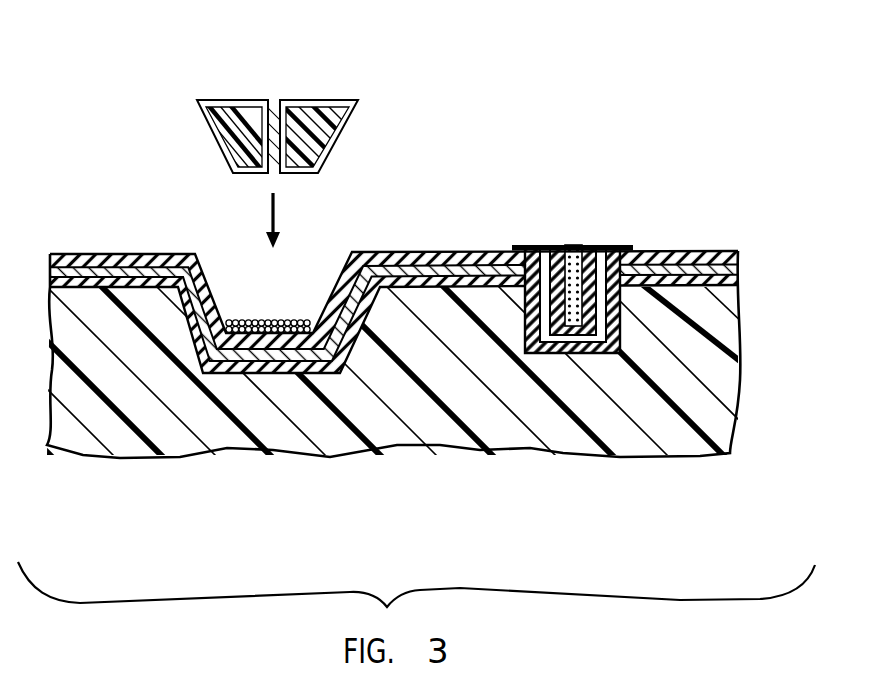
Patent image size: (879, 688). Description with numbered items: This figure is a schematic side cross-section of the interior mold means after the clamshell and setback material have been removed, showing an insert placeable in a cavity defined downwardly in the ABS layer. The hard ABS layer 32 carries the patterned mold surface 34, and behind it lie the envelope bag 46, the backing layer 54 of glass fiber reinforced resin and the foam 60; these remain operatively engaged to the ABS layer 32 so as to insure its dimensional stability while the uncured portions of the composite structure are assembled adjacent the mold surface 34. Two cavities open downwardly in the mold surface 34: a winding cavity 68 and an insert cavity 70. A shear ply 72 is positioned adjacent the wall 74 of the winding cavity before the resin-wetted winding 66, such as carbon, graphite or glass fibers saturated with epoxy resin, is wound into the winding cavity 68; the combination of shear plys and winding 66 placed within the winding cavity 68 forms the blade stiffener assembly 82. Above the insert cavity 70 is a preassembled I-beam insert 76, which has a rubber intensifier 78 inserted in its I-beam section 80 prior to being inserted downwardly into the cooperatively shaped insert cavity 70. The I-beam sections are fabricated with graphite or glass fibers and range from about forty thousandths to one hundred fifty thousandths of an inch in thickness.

The layer of heat deformable ABS plastic 32 is at (712, 246).
The mold surface 34 is at (95, 254).
The envelope bag 46 is at (737, 262).
The backing layer 54 is at (737, 278).
The foam 60 is at (678, 380).
The winding 66 is at (300, 310).
The winding cavity 68 is at (580, 235).
The insert cavity 70 is at (233, 274).
The shear ply 72 is at (603, 247).
The wall of the winding cavity 74 is at (533, 332).
The I-beam insert 76 is at (279, 103).
The rubber intensifier 78 is at (333, 137).
The I-beam section 80 is at (243, 100).
The blade stiffener assembly 82 is at (573, 345).